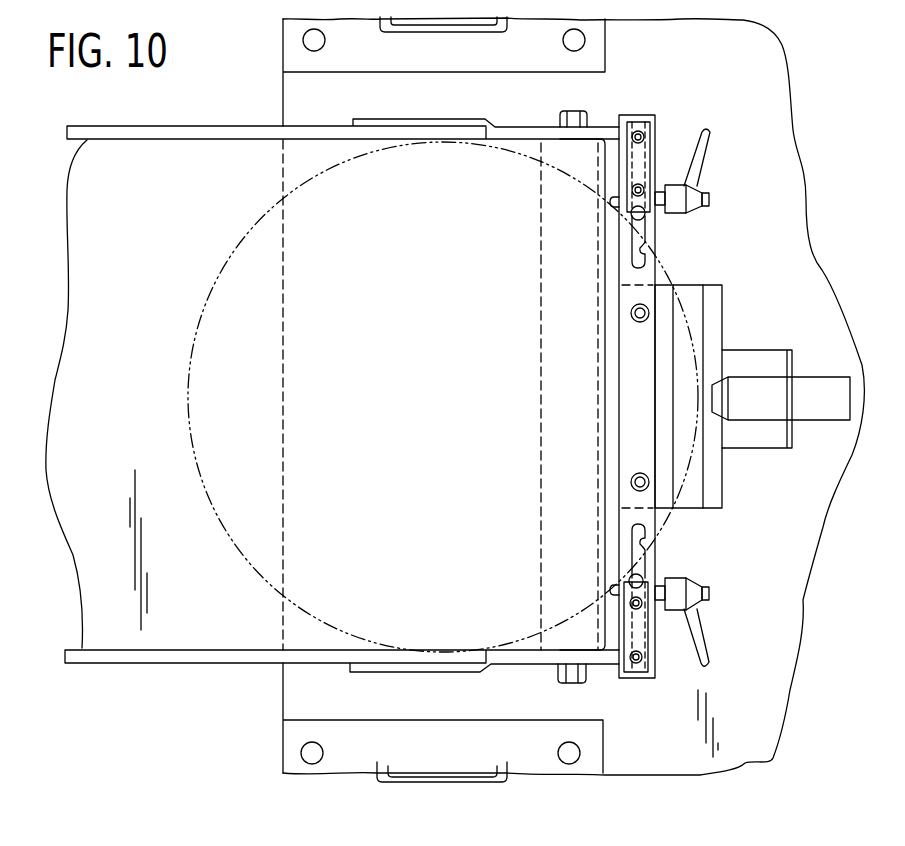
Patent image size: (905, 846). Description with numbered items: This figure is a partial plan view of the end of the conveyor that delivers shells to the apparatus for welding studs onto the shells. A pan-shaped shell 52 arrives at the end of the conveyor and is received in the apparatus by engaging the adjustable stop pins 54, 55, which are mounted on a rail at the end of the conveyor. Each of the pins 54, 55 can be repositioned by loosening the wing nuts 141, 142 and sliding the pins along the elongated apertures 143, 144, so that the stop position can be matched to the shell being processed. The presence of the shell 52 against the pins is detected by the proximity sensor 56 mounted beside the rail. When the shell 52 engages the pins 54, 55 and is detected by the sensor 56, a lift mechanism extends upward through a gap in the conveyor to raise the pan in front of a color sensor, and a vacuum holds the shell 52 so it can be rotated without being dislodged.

The shell 52 is at (190, 395).
The adjustable stop pin 54 is at (643, 578).
The adjustable stop pin 55 is at (645, 216).
The proximity sensor 56 is at (752, 378).
The wing nut 141 is at (700, 628).
The wing nut 142 is at (703, 173).
The elongated aperture 143 is at (648, 528).
The elongated aperture 144 is at (648, 244).